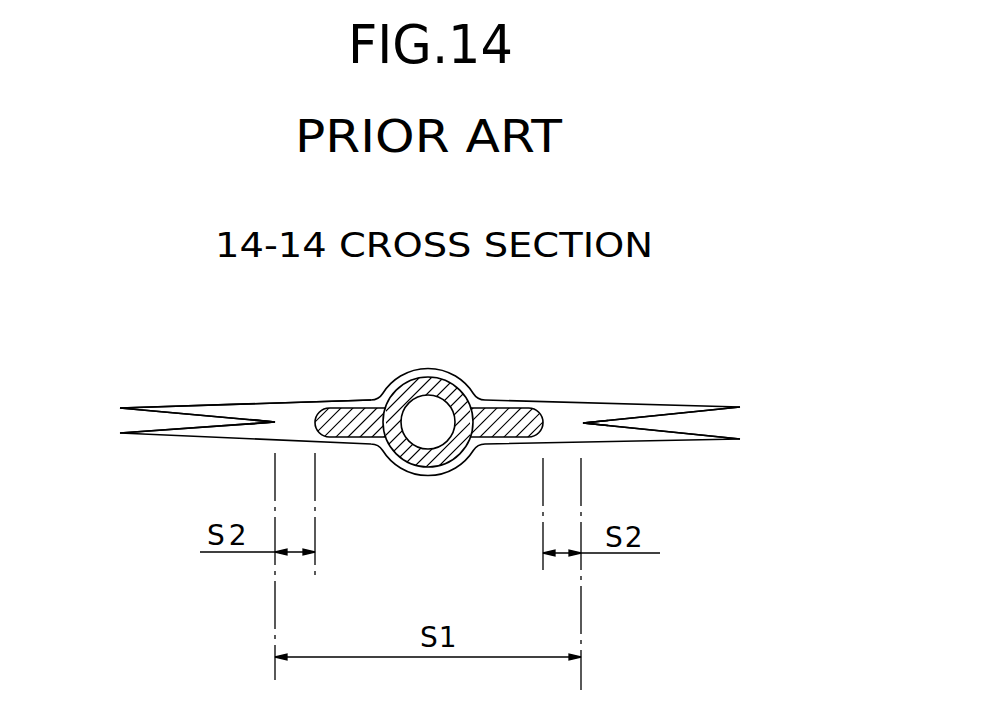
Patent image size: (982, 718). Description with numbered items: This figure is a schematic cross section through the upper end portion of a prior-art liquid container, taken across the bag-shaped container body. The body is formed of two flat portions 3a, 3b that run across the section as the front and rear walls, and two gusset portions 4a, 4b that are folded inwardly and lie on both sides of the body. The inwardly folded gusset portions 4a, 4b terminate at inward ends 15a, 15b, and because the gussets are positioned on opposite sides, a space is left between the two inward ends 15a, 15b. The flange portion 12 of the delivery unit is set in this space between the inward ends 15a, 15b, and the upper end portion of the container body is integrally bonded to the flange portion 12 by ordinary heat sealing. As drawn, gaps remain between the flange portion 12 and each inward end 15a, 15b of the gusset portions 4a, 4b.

The flat portion 3a is at (663, 445).
The flat portion 3b is at (558, 400).
The gusset portion 4a is at (724, 406).
The gusset portion 4b is at (133, 409).
The flange portion 12 is at (347, 413).
The inward end 15a is at (584, 422).
The inward end 15b is at (275, 421).